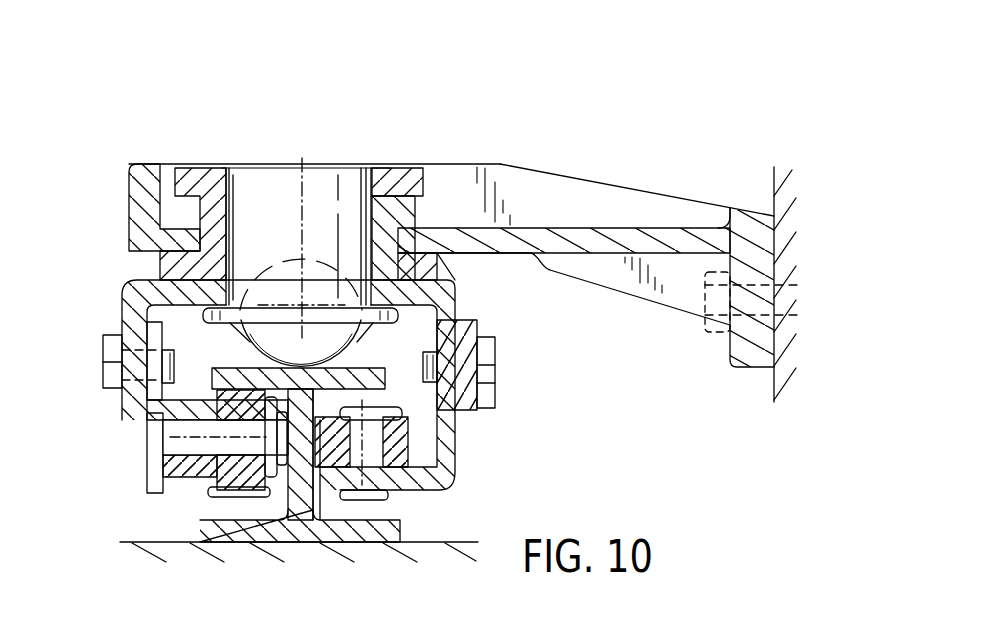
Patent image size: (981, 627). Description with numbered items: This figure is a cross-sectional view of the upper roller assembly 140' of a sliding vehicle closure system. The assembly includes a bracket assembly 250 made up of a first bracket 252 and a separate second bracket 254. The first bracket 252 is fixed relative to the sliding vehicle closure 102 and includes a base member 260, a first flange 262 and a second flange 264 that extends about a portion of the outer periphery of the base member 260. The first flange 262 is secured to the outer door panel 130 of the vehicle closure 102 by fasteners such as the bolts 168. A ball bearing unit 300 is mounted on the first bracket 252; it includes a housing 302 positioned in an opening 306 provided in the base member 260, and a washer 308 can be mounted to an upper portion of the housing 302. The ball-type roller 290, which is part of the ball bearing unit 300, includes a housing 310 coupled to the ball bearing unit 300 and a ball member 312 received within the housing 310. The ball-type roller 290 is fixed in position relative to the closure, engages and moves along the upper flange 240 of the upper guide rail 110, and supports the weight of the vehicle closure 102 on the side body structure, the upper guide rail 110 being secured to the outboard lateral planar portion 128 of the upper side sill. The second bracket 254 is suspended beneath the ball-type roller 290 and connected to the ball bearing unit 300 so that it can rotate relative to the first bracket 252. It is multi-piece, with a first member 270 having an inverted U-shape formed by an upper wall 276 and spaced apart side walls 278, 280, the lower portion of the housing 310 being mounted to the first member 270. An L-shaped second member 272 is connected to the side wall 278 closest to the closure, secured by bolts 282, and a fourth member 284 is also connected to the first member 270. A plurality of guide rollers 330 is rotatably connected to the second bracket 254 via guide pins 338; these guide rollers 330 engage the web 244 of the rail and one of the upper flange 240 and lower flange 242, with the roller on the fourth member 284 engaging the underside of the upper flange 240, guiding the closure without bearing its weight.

The upper roller assembly 140' is at (128, 74).
The housing 302 is at (196, 166).
The ball bearing unit 300 is at (259, 160).
The housing 310 is at (318, 174).
The opening 306 is at (392, 170).
The washer 308 is at (415, 178).
The first bracket 252 is at (506, 160).
The bracket assembly 250 is at (600, 150).
The base member 260 is at (606, 236).
The vehicle closure 102 is at (776, 176).
The outer door panel 130 is at (772, 196).
The second flange 264 is at (137, 203).
The first member 270 is at (123, 290).
The side wall 280 is at (133, 320).
The ball-type roller 290 is at (216, 333).
The bolts 282 is at (115, 375).
The guide pins 338 is at (160, 440).
The fourth member 284 is at (212, 466).
The guide rollers 330 is at (410, 432).
The upper guide rail 110 is at (214, 548).
The lower flange 242 is at (245, 535).
The web 244 is at (303, 486).
The ball member 312 is at (350, 357).
The upper wall 276 is at (414, 296).
The upper flange 240 is at (385, 376).
The side wall 278 is at (468, 343).
The second bracket 254 is at (485, 417).
The second member 272 is at (444, 478).
The outboard lateral planar portion 128 is at (463, 543).
The bolts 168 is at (710, 328).
The first flange 262 is at (756, 352).